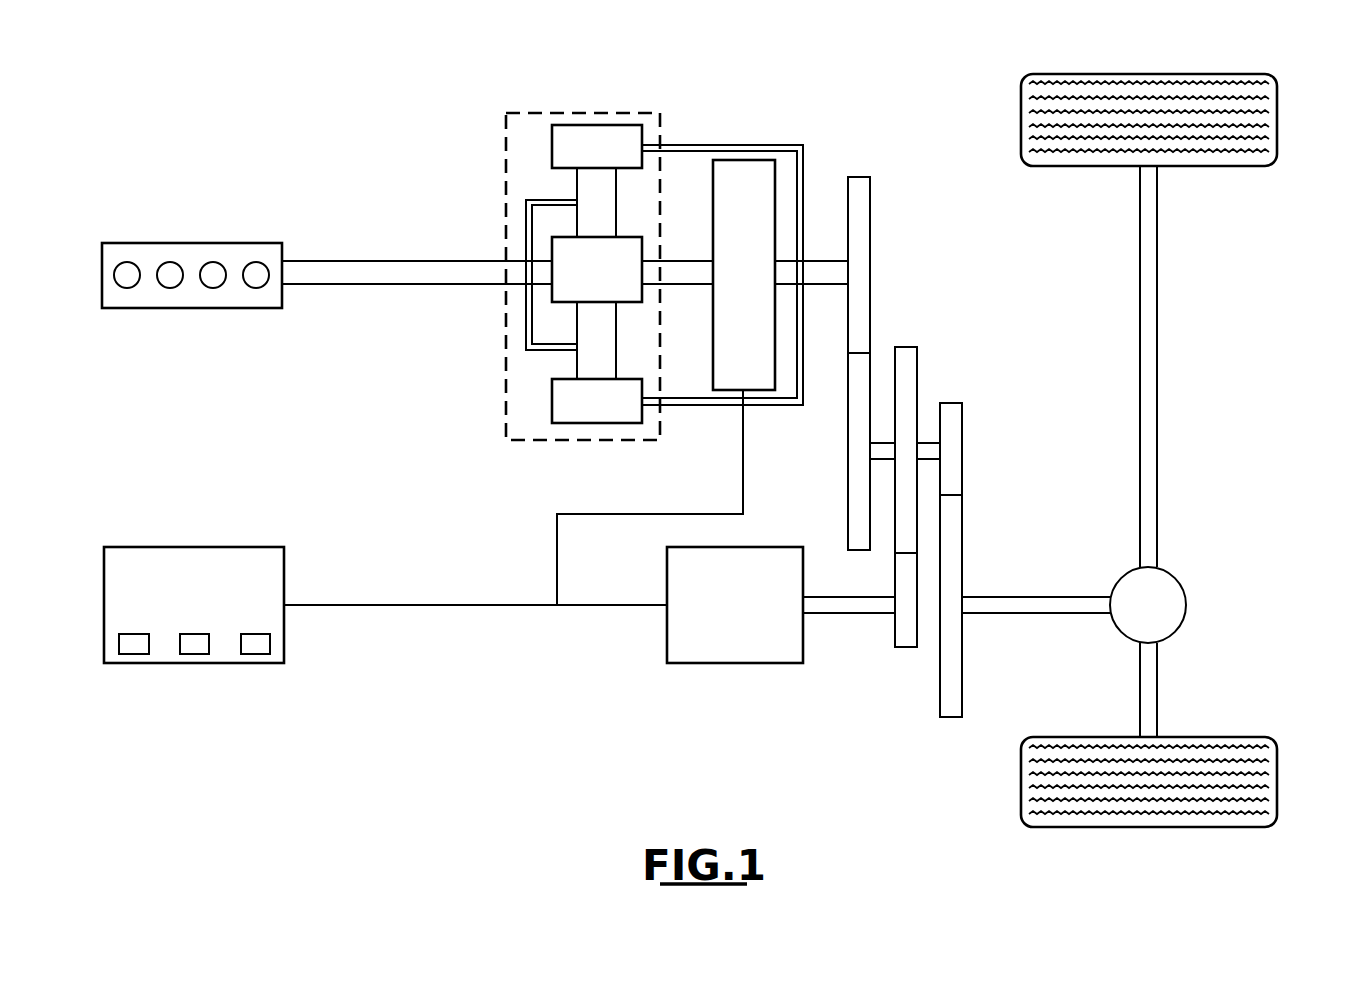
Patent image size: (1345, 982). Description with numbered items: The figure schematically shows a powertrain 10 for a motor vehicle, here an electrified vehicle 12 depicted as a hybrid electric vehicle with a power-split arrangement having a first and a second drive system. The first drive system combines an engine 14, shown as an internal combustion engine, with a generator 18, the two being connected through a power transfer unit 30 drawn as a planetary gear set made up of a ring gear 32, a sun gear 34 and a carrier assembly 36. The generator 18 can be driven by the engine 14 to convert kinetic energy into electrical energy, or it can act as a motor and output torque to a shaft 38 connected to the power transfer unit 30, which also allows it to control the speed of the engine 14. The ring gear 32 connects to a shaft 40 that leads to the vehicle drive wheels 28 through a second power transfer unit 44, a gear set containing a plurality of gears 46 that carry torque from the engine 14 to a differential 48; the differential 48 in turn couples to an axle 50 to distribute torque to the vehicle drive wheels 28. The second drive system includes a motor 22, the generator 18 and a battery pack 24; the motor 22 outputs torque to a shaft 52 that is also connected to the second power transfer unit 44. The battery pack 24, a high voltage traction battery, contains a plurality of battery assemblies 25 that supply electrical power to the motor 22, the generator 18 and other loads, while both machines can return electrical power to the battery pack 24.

The powertrain 10 is at (340, 137).
The electrified vehicle 12 is at (810, 38).
The engine 14 is at (122, 243).
The generator 18 is at (719, 160).
The motor 22 is at (803, 647).
The battery pack 24 is at (122, 547).
The battery assemblies 25 is at (149, 645).
The vehicle drive wheels 28 is at (1277, 780).
The power transfer unit 30 is at (568, 440).
The ring gear 32 is at (552, 145).
The sun gear 34 is at (552, 243).
The carrier assembly 36 is at (526, 334).
The shaft 38 is at (679, 261).
The shaft 40 is at (823, 261).
The second power transfer unit 44 is at (942, 447).
The gears 46 is at (871, 315).
The differential 48 is at (1182, 627).
The axle 50 is at (1157, 355).
The shaft 52 is at (860, 613).